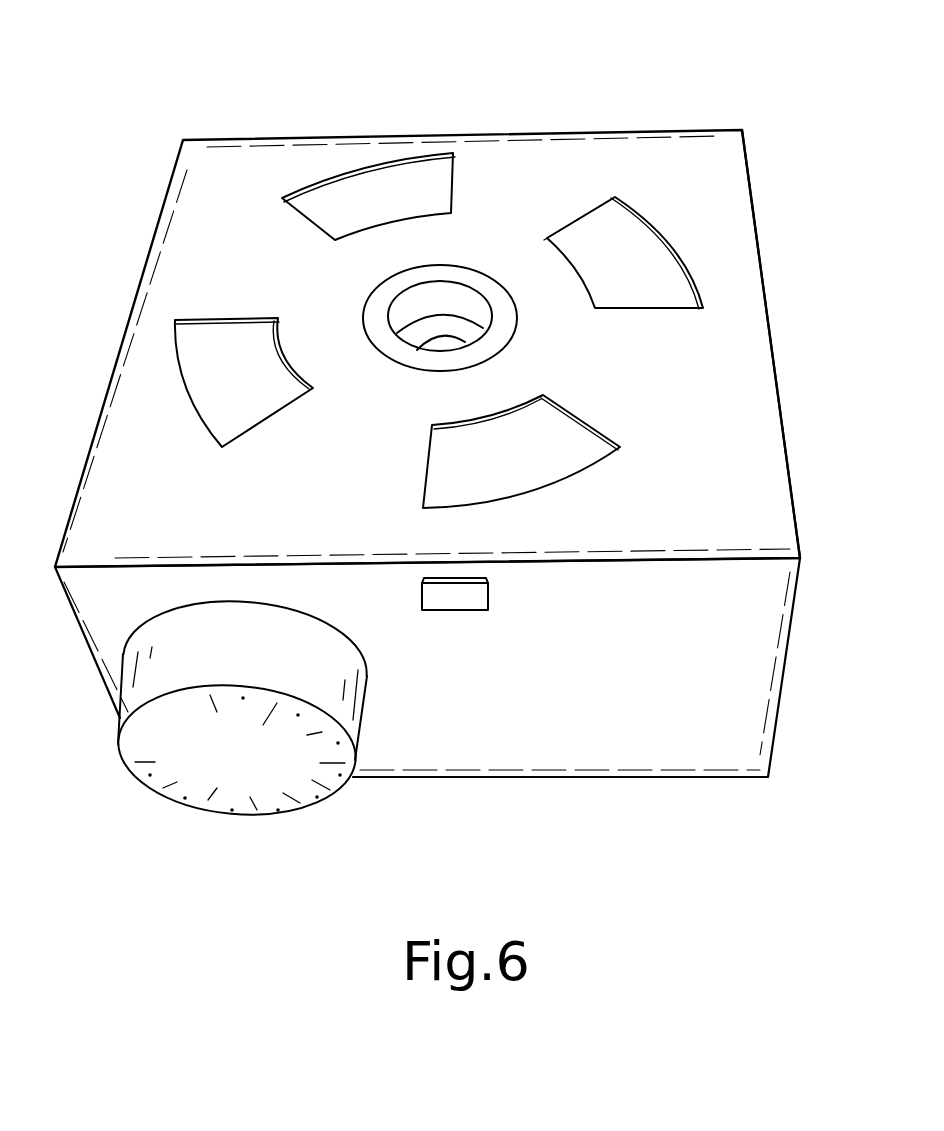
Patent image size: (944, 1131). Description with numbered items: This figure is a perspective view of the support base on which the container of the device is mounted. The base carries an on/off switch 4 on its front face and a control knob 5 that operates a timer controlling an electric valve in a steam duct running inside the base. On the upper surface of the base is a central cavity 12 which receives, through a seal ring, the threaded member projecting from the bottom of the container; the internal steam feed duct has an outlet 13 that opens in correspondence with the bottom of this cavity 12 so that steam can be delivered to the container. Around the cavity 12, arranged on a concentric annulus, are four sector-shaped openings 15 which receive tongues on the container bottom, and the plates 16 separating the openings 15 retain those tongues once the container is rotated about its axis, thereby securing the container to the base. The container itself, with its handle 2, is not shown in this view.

The handle 2 is at (692, 784).
The on/off switch 4 is at (463, 597).
The control knob 5 is at (212, 762).
The cavity 12 is at (417, 330).
The outlet 13 is at (445, 350).
The openings 15 is at (408, 192).
The plates 16 is at (258, 263).